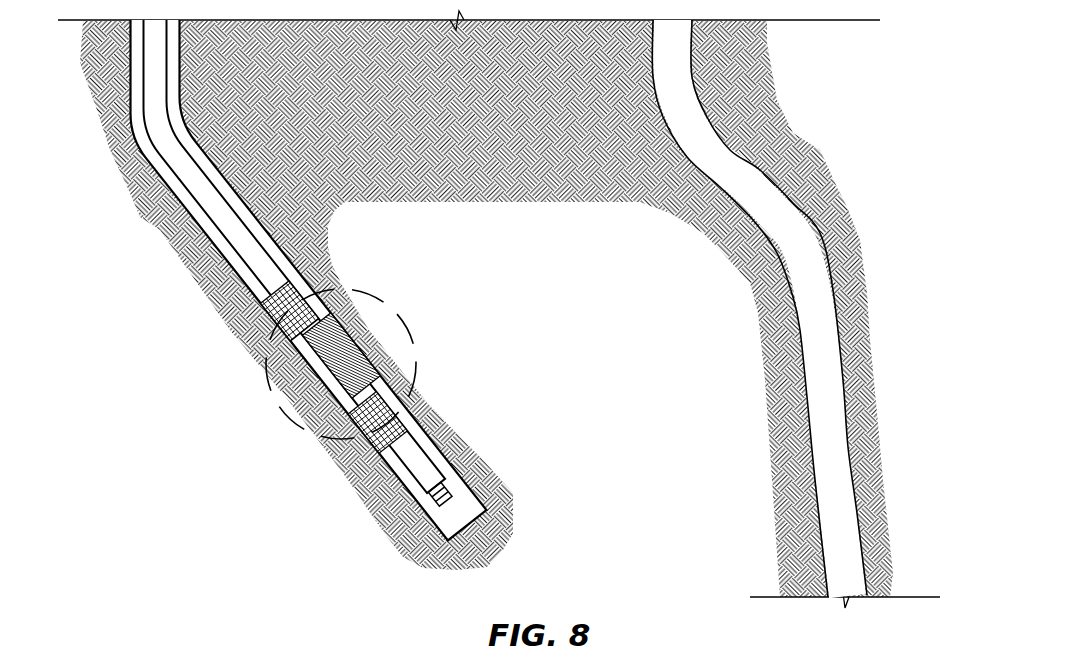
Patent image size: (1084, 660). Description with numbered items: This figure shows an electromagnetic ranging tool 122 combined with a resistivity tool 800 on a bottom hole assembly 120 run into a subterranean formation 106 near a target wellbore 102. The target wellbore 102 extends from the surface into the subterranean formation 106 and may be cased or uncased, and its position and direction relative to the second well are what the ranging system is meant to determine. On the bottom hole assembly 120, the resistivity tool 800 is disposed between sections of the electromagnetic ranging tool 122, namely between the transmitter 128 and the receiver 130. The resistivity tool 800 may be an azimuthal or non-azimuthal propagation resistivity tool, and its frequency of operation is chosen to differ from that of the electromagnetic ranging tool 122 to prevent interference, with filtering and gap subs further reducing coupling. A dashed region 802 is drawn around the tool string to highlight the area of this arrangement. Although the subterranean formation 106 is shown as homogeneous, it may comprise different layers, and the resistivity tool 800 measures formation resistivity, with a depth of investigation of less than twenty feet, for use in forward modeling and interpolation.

The target wellbore 102 is at (780, 208).
The subterranean formation 106 is at (482, 153).
The bottom hole assembly 120 is at (388, 529).
The electromagnetic ranging tool 122 is at (353, 417).
The transmitter 128 is at (283, 293).
The receiver 130 is at (393, 430).
The resistivity tool 800 is at (343, 367).
The detail region 802 is at (348, 290).